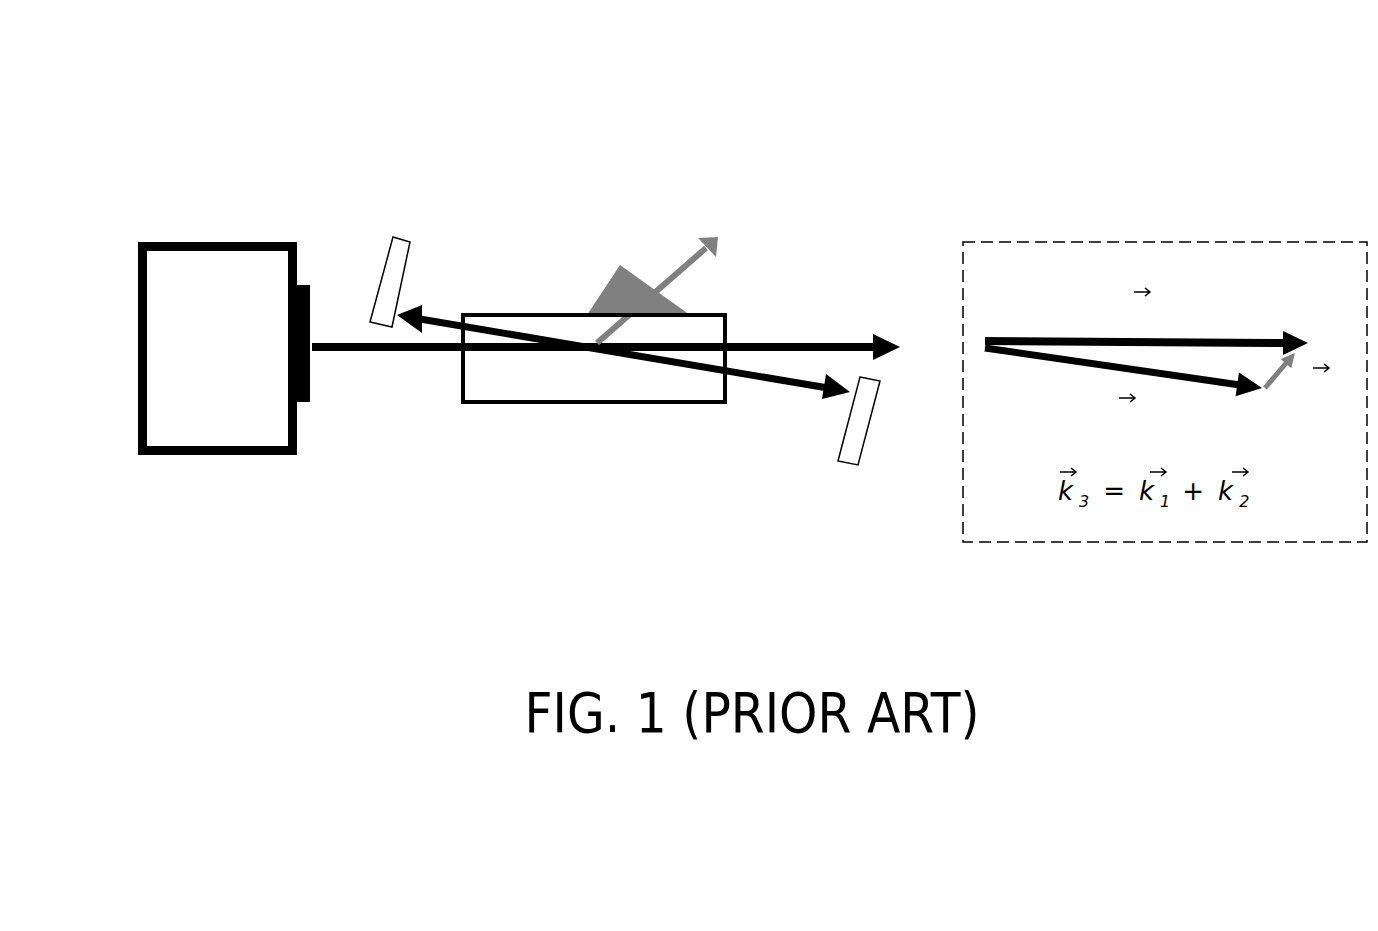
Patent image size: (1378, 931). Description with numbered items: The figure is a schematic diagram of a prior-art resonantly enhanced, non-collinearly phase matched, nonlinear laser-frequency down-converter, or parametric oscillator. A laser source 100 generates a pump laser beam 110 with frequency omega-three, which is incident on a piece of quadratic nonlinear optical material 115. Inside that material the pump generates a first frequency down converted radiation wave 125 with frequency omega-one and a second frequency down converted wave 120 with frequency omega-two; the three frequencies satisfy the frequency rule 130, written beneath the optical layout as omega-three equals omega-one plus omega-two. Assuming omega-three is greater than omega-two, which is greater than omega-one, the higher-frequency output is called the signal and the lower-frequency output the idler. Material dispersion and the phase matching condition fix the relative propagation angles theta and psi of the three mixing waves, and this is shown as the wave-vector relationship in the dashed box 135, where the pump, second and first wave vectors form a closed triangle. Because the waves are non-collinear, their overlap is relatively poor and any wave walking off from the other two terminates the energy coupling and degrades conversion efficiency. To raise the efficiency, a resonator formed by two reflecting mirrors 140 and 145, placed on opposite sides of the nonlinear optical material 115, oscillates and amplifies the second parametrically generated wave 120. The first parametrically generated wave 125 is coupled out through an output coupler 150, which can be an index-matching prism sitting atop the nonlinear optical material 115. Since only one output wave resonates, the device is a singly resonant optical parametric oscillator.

The laser source 100 is at (227, 349).
The pump laser beam 110 is at (350, 332).
The quadratic nonlinear optical material 115 is at (507, 380).
The second frequency down converted wave 120 is at (800, 392).
The first frequency down converted radiation wave 125 is at (670, 262).
The frequency rule 130 is at (488, 545).
The dashed box 135 is at (1070, 252).
The reflecting mirror 140 is at (415, 245).
The reflecting mirror 145 is at (868, 447).
The output coupler 150 is at (602, 280).